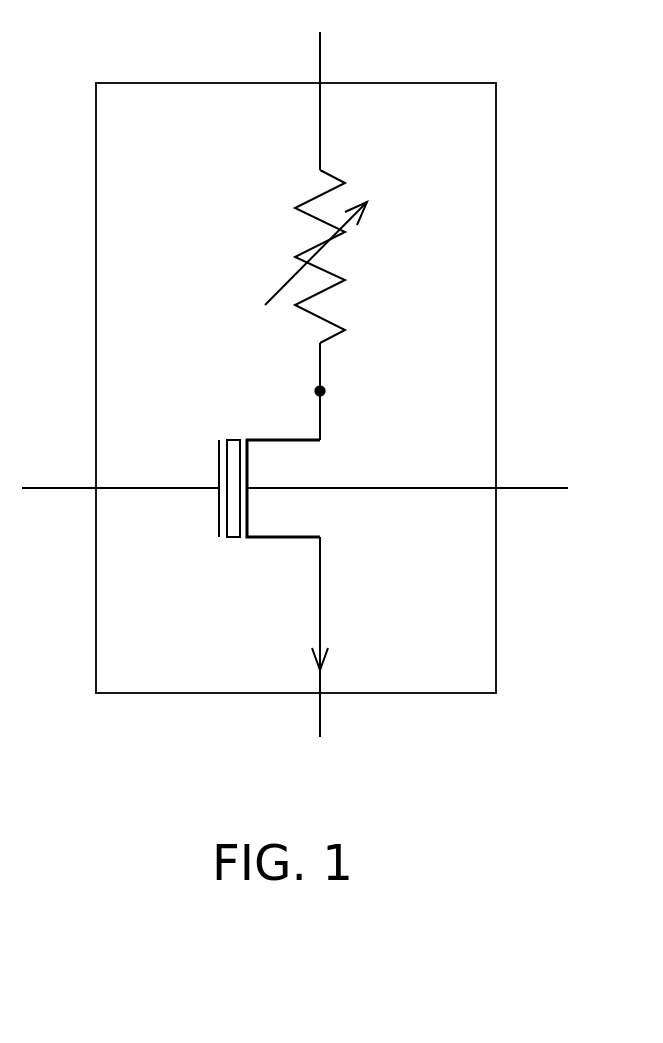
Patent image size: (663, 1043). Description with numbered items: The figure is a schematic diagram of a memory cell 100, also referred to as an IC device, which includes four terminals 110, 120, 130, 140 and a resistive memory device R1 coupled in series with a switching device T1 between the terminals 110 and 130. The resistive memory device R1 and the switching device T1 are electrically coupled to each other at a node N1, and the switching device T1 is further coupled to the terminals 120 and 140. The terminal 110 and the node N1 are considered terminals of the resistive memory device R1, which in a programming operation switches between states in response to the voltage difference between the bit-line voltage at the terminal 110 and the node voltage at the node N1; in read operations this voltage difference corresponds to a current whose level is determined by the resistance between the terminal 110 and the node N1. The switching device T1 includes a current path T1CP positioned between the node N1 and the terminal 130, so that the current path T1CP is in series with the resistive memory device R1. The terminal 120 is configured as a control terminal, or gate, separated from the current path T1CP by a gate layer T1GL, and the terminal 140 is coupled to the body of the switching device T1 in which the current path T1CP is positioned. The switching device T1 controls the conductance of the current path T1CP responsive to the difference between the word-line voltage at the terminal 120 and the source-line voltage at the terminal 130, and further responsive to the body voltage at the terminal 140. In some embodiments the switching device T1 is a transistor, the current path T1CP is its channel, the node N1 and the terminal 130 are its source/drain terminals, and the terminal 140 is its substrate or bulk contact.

The memory cell 100 is at (157, 128).
The terminal 110 is at (322, 101).
The terminal 120 is at (120, 491).
The terminal 130 is at (320, 637).
The terminal 140 is at (407, 491).
The resistive memory device R1 is at (315, 256).
The node N1 is at (342, 391).
The switching device T1 is at (246, 472).
The gate layer T1GL is at (235, 447).
The current path T1CP is at (283, 488).